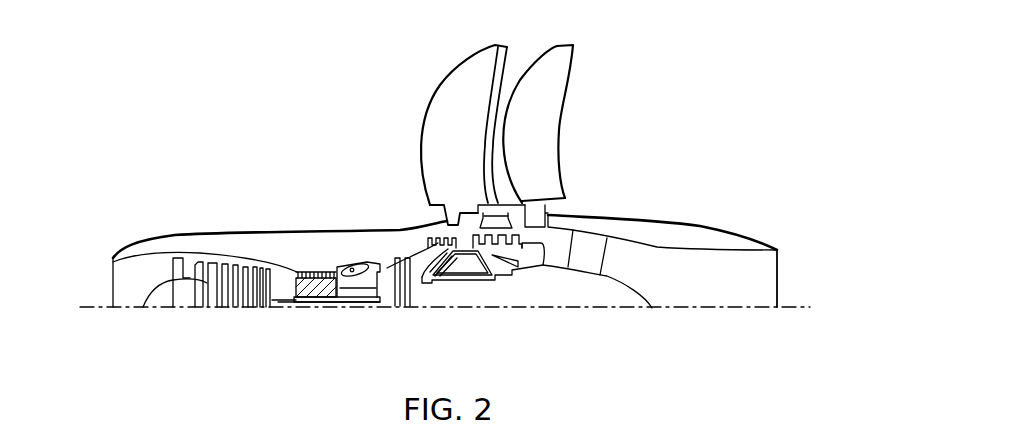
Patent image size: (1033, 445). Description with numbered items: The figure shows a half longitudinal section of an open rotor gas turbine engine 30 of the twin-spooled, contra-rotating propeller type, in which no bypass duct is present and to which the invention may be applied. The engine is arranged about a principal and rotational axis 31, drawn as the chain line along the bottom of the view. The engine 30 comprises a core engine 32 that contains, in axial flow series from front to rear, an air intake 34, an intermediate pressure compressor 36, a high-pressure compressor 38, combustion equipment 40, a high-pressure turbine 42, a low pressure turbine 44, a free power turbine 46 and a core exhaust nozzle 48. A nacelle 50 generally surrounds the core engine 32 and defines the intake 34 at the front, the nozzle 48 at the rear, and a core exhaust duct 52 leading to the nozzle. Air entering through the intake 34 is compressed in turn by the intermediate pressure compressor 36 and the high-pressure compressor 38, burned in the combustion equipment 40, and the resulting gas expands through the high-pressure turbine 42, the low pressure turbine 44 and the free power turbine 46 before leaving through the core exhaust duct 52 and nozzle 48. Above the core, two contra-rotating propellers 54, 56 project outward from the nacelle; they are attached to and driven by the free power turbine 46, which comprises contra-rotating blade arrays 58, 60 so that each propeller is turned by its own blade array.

The gas turbine engine 30 is at (329, 167).
The principal and rotational axis 31 is at (687, 308).
The core engine 32 is at (337, 260).
The air intake 34 is at (112, 278).
The intermediate pressure compressor 36 is at (208, 284).
The high-pressure compressor 38 is at (325, 298).
The combustion equipment 40 is at (353, 278).
The high-pressure turbine 42 is at (386, 268).
The low pressure turbine 44 is at (411, 285).
The free power turbine 46 is at (434, 221).
The core exhaust nozzle 48 is at (779, 251).
The nacelle 50 is at (233, 244).
The core exhaust duct 52 is at (640, 260).
The contra-rotating propeller 54 is at (487, 70).
The contra-rotating propeller 56 is at (553, 98).
The contra-rotating blade array 58 is at (447, 253).
The contra-rotating blade array 60 is at (530, 265).